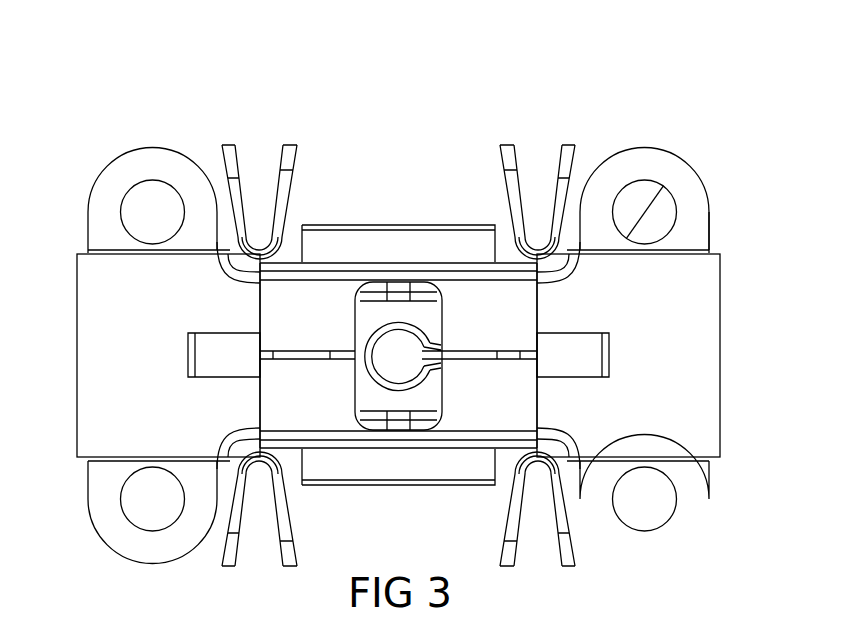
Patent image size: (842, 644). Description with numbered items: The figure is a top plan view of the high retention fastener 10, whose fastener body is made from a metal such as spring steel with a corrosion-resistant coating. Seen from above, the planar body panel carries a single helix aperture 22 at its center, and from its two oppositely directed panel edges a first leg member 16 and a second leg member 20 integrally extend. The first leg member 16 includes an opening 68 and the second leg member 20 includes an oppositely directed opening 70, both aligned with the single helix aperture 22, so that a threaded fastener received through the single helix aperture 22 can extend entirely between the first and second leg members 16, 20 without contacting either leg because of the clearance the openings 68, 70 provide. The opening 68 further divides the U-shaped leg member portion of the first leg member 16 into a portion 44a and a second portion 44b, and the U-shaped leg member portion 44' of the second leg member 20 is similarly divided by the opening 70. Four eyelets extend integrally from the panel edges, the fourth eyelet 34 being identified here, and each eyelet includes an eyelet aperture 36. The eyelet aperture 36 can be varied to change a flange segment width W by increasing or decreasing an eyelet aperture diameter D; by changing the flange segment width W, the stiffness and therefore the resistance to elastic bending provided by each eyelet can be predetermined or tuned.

The high retention fastener 10 is at (96, 160).
The fourth eyelet 34 is at (611, 170).
The eyelet aperture diameter D is at (625, 238).
The flange segment width W is at (701, 181).
The eyelet aperture 36 is at (677, 214).
The second portion of U-shaped leg member portion 44b is at (270, 318).
The portion of U-shaped leg member portion 44a is at (528, 317).
The U-shaped leg member portion 44' is at (509, 420).
The opening 68 is at (358, 330).
The opening 70 is at (357, 383).
The single helix aperture 22 is at (397, 328).
The first leg member 16 is at (500, 252).
The second leg member 20 is at (523, 435).